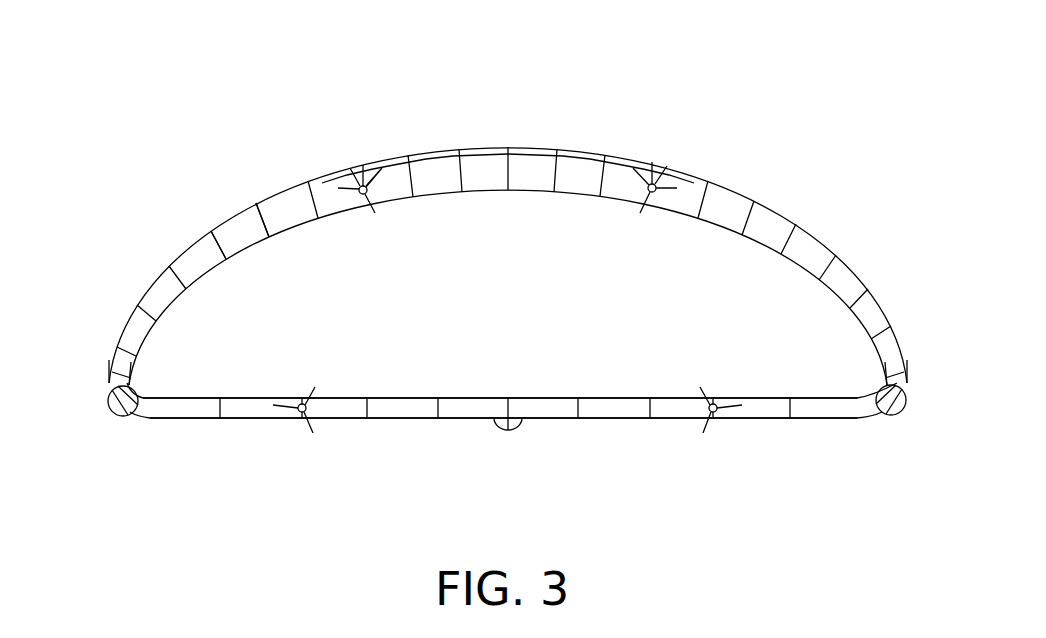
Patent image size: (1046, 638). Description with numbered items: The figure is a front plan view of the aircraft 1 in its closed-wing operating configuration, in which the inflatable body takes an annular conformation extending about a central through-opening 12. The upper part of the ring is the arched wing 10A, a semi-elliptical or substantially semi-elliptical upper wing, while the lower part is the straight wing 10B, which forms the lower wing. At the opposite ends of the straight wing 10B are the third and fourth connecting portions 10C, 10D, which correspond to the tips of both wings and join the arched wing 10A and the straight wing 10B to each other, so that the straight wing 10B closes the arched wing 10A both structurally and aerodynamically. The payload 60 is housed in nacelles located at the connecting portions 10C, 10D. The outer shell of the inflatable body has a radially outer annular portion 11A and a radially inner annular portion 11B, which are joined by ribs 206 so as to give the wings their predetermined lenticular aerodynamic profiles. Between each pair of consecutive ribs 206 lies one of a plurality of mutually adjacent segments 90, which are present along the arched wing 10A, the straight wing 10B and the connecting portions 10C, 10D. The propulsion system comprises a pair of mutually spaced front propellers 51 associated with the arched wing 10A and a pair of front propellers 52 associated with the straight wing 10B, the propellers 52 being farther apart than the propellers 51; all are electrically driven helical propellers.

The aircraft 1 is at (397, 97).
The arched wing 10A is at (530, 285).
The straight wing 10B is at (575, 415).
The third connecting portion 10C is at (108, 372).
The fourth connecting portion 10D is at (903, 372).
The radially outer annular portion 11A is at (690, 180).
The radially inner annular portion 11B is at (423, 196).
The through-opening 12 is at (622, 327).
The front propellers 51 is at (340, 172).
The front propellers 52 is at (298, 432).
The payload 60 is at (113, 412).
The segments 90 is at (237, 217).
The ribs 206 is at (255, 210).